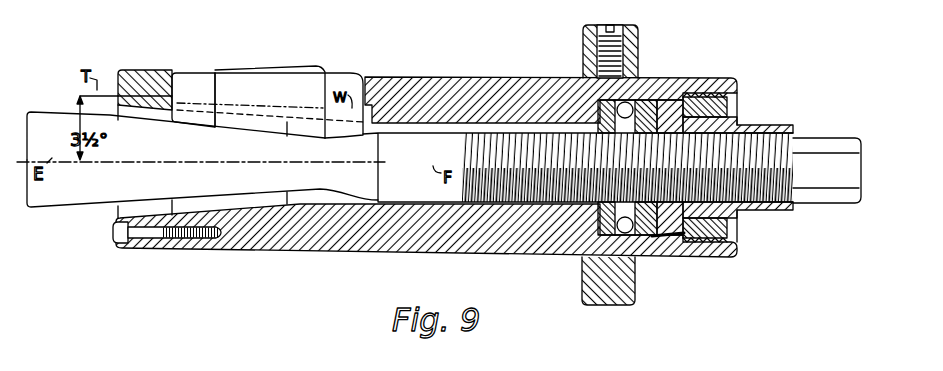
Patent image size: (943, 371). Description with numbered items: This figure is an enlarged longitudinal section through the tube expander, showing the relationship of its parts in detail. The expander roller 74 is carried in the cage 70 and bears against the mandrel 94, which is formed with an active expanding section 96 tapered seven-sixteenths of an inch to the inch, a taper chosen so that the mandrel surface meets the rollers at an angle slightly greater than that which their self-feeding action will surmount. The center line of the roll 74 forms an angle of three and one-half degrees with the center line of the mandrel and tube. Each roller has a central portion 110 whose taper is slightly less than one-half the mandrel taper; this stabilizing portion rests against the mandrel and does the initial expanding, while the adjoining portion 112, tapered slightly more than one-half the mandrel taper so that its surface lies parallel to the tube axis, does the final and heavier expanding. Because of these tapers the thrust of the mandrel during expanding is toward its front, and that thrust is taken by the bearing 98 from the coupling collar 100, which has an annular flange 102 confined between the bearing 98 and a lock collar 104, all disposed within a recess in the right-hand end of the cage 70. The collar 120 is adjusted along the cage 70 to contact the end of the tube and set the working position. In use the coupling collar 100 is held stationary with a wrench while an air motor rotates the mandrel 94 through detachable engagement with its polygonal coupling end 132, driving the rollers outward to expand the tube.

The cage 70 is at (463, 87).
The expander roller 74 is at (262, 122).
The mandrel 94 is at (22, 118).
The active expanding section 96 is at (68, 207).
The bearing 98 is at (650, 103).
The coupling collar 100 is at (741, 122).
The annular flange 102 is at (668, 238).
The lock collar 104 is at (728, 230).
The central tapered portion 110 is at (318, 67).
The roller end portion 112 is at (213, 63).
The collar 120 is at (613, 306).
The polygonal coupling end 132 is at (828, 142).